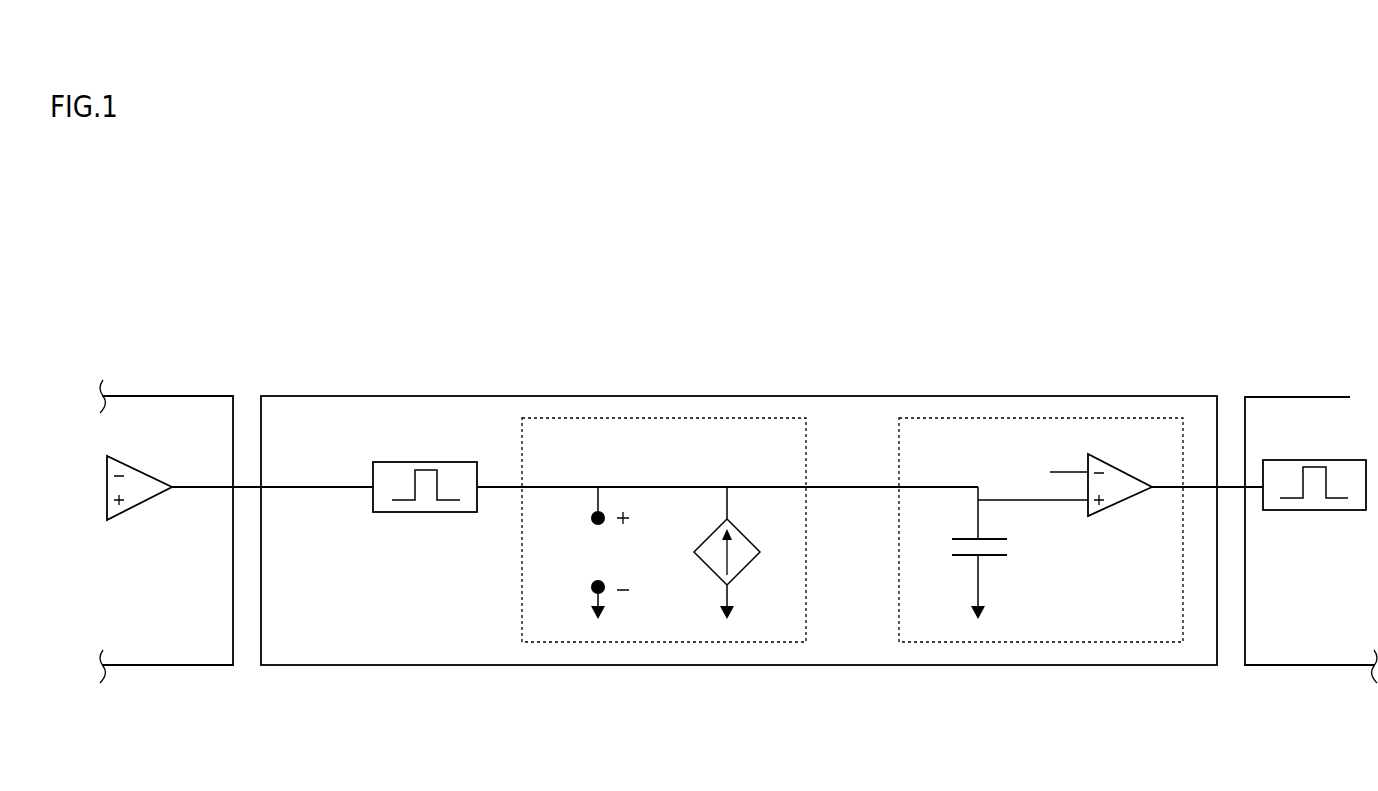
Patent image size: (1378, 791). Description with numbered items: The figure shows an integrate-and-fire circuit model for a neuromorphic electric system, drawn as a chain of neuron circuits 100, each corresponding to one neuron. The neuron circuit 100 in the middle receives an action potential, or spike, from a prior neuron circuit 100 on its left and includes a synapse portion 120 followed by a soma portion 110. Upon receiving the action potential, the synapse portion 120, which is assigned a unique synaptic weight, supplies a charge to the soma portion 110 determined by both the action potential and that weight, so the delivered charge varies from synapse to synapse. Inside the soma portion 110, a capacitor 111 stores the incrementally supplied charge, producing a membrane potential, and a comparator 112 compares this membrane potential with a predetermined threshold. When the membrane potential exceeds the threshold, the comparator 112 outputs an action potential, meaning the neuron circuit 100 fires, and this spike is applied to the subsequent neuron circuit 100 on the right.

The neuron circuit 100 is at (173, 396).
The synapse portion 120 is at (697, 418).
The soma portion 110 is at (1044, 518).
The capacitor 111 is at (988, 570).
The comparator 112 is at (1108, 453).